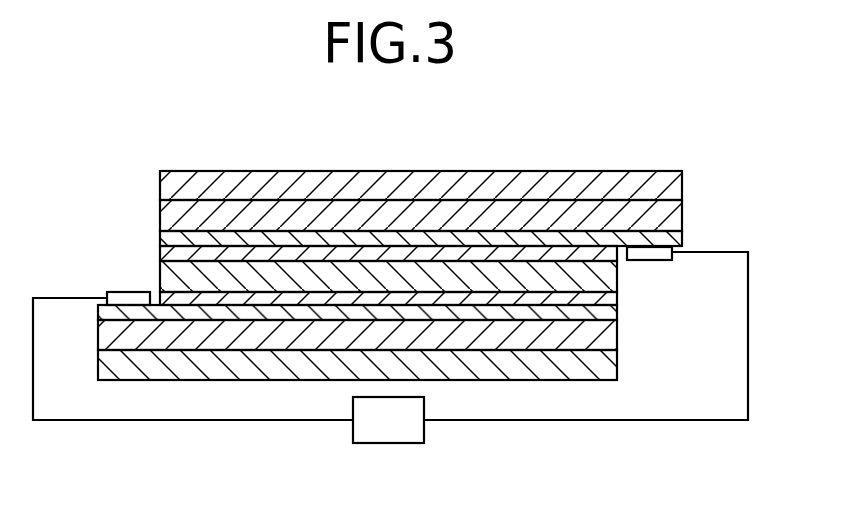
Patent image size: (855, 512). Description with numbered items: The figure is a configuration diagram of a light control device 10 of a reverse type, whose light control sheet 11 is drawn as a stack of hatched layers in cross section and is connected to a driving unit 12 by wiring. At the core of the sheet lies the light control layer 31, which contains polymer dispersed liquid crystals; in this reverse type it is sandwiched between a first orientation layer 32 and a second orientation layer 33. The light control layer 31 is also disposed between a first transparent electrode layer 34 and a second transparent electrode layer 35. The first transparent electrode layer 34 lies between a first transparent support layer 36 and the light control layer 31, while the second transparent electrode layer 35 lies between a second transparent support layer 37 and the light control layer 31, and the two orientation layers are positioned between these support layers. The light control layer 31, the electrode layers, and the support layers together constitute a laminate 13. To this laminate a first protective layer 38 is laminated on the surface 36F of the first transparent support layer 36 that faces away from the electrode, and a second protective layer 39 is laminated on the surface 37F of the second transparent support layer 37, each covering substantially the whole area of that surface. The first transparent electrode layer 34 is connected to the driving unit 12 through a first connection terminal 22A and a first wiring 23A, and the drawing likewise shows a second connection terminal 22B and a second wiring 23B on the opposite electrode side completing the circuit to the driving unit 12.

The light control device 10 is at (121, 178).
The light control sheet 11 is at (238, 162).
The driving unit 12 is at (425, 431).
The laminate 13 is at (766, 261).
The first connection terminal 22A is at (131, 292).
The second connection terminal 22B is at (655, 261).
The first wiring 23A is at (190, 421).
The second wiring 23B is at (607, 421).
The light control layer 31 is at (618, 277).
The first orientation layer 32 is at (618, 300).
The second orientation layer 33 is at (159, 253).
The first transparent electrode layer 34 is at (98, 313).
The second transparent electrode layer 35 is at (683, 238).
The first transparent support layer 36 is at (388, 360).
The surface 36F is at (148, 352).
The second transparent support layer 37 is at (393, 171).
The surface 37F is at (476, 171).
The first protective layer 38 is at (618, 357).
The second protective layer 39 is at (616, 172).